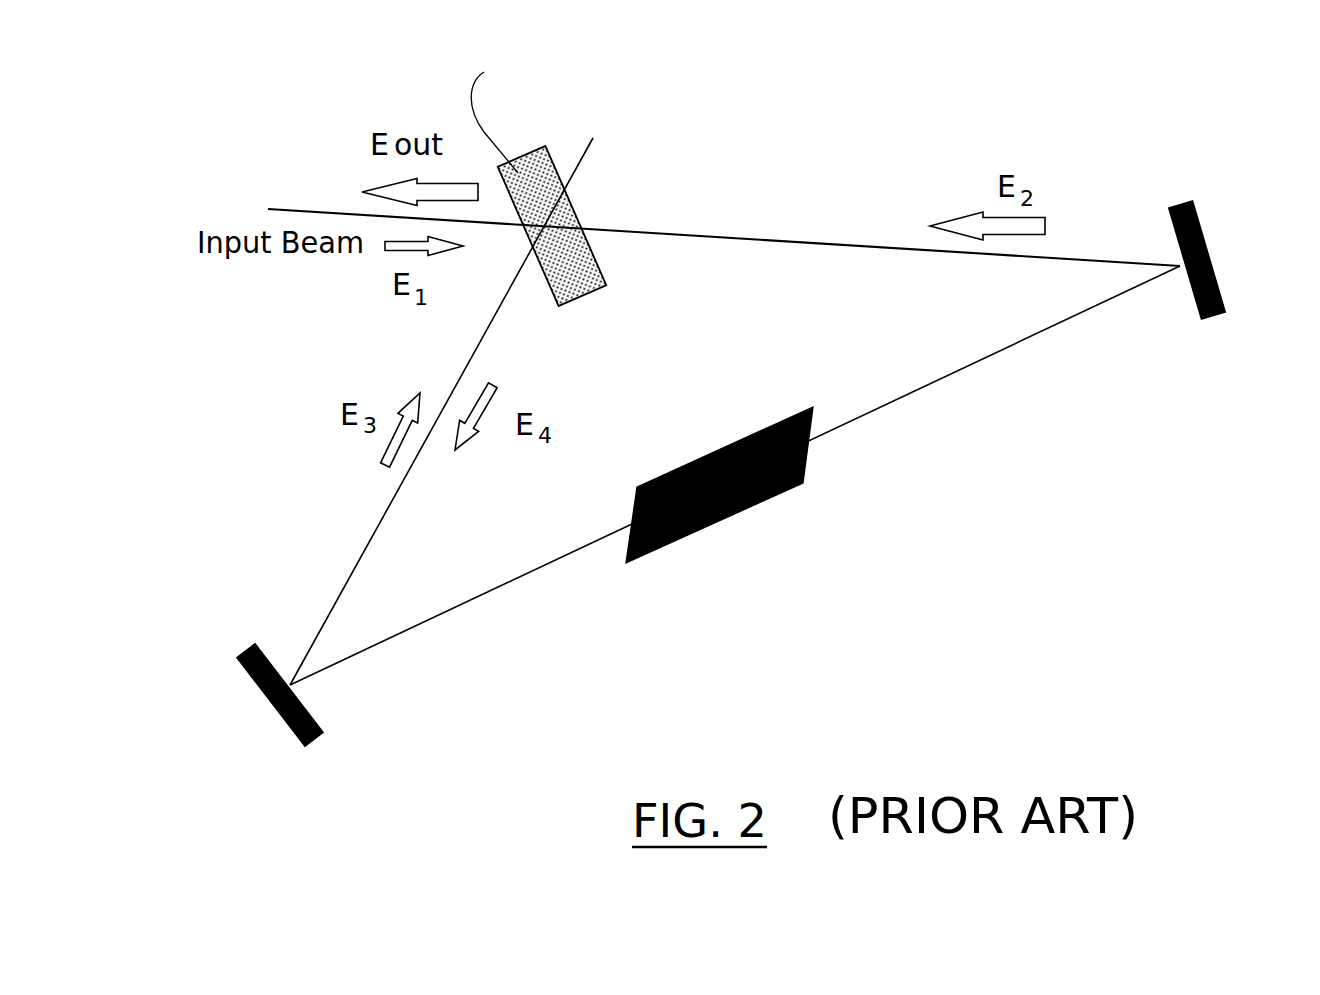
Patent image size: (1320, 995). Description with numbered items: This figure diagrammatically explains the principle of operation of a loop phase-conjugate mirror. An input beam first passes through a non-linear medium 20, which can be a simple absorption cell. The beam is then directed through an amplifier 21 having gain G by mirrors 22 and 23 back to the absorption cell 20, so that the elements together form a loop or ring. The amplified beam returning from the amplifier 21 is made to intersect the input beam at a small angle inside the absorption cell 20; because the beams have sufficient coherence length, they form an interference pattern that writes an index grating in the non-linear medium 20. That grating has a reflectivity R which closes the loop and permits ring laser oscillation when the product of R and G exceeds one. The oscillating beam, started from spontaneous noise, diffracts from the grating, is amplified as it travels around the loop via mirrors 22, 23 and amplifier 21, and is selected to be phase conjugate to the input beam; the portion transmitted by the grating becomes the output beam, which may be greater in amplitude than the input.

The non-linear medium 20 is at (578, 215).
The amplifier 21 is at (791, 415).
The mirror 22 is at (1207, 224).
The mirror 23 is at (253, 684).